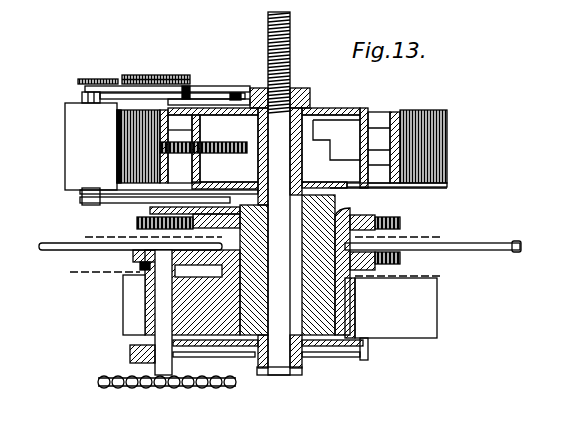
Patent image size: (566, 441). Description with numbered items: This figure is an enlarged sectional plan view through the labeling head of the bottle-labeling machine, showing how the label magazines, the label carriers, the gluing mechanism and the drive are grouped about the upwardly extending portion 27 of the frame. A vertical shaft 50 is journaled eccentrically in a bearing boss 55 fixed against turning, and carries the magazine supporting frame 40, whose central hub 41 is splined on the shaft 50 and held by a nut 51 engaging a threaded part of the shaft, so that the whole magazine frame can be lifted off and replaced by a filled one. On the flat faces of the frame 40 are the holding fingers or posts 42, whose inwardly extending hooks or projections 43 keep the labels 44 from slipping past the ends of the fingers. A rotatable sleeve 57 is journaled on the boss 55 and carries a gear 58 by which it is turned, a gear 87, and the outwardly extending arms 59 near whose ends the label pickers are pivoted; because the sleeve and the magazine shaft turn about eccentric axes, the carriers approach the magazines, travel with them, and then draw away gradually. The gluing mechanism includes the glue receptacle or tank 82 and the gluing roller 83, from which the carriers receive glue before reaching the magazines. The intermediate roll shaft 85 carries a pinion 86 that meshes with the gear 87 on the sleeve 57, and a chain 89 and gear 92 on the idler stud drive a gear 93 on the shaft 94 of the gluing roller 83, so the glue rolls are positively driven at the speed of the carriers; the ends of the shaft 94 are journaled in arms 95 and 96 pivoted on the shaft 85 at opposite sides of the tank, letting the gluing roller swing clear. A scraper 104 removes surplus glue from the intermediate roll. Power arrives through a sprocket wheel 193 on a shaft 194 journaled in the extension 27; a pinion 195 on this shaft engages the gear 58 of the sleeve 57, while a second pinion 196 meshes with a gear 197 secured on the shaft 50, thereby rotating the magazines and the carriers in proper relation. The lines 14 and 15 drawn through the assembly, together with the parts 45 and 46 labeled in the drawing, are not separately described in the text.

The shaft line 14 is at (255, 277).
The shaft line 15 is at (262, 236).
The upwardly extending portion of the frame 27 is at (396, 308).
The magazine supporting frame 40 is at (363, 107).
The central hub 41 is at (306, 126).
The holding fingers or posts 42 is at (378, 115).
The inwardly extending hooks or projections 43 is at (446, 186).
The labels 44 is at (126, 152).
The motor 45 is at (401, 109).
The gear 46 is at (209, 148).
The shaft 50 is at (291, 18).
The nut 51 is at (300, 93).
The bearing boss 55 is at (328, 211).
The rotatable sleeve 57 is at (346, 223).
The gear 58 is at (400, 257).
The outwardly extending arms 59 is at (48, 246).
The glue receptacle or tank 82 is at (213, 99).
The gluing roller 83 is at (91, 146).
The shaft 85 is at (194, 100).
The pinion 86 is at (137, 222).
The gear 87 is at (420, 215).
The chain 89 is at (158, 76).
The gear 92 is at (145, 76).
The gear 93 is at (112, 78).
The shaft 94 is at (83, 194).
The arm 95 is at (99, 200).
The arm 96 is at (178, 98).
The scraper 104 is at (236, 93).
The sprocket wheel 193 is at (147, 384).
The shaft 194 is at (165, 304).
The pinion 195 is at (134, 258).
The pinion 196 is at (131, 350).
The gear 197 is at (368, 352).